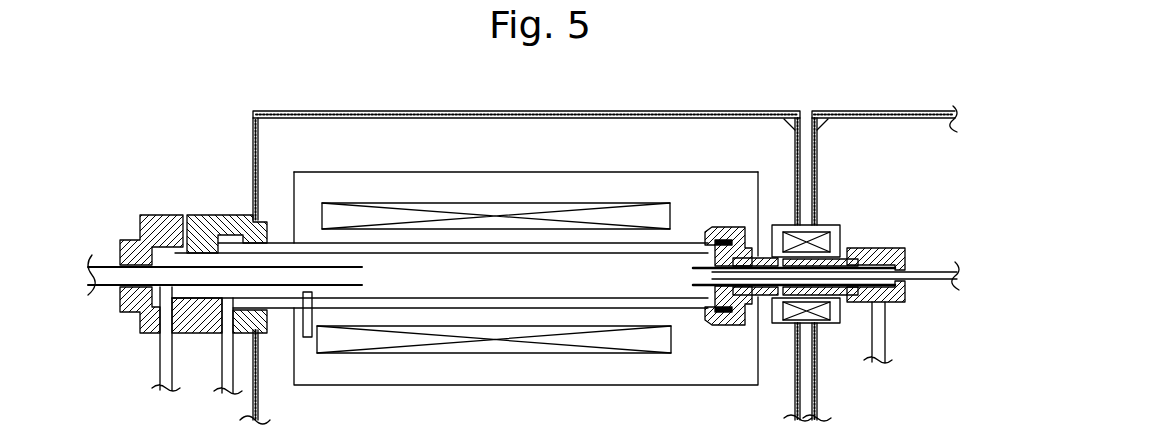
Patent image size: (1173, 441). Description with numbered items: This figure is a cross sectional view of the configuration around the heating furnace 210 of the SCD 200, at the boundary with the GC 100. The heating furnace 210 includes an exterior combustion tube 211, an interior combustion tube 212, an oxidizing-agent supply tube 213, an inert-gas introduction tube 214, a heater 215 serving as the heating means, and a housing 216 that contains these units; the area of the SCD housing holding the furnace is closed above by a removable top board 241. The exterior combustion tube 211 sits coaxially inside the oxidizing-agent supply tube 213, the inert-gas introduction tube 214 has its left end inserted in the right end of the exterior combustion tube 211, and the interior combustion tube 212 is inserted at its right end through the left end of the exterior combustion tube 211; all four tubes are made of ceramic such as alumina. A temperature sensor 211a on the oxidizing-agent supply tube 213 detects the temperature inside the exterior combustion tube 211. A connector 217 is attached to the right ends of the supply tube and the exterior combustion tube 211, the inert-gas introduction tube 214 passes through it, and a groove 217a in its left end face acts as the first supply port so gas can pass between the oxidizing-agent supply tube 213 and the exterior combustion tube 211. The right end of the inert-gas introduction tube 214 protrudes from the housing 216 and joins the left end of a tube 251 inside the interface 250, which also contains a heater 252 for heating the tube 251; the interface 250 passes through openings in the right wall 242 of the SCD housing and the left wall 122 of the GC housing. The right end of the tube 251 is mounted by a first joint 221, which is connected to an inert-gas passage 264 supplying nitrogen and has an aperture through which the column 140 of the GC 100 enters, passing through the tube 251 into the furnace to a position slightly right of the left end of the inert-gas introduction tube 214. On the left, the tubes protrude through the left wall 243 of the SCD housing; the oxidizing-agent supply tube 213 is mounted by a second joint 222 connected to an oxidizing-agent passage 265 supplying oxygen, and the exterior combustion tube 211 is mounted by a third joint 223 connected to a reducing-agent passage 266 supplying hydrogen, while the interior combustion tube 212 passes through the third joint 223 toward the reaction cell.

The GC 100 is at (957, 105).
The left wall 122 is at (834, 116).
The column 140 is at (927, 272).
The SCD 200 is at (388, 100).
The heating furnace 210 is at (328, 163).
The exterior combustion tube 211 is at (636, 298).
The temperature sensor 211a is at (308, 337).
The interior combustion tube 212 is at (107, 266).
The oxidizing-agent supply tube 213 is at (675, 310).
The inert-gas introduction tube 214 is at (705, 258).
The heater 215 is at (528, 202).
The housing 216 is at (460, 170).
The connector 217 is at (730, 227).
The groove 217a is at (710, 320).
The first joint 221 is at (888, 253).
The second joint 222 is at (227, 214).
The third joint 223 is at (173, 214).
The top board 241 is at (652, 111).
The right wall 242 is at (782, 112).
The left wall 243 is at (250, 136).
The interface 250 is at (843, 217).
The tube 251 is at (837, 295).
The heater 252 is at (788, 231).
The inert-gas passage 264 is at (887, 328).
The oxidizing-agent passage 265 is at (227, 357).
The reducing-agent passage 266 is at (160, 353).